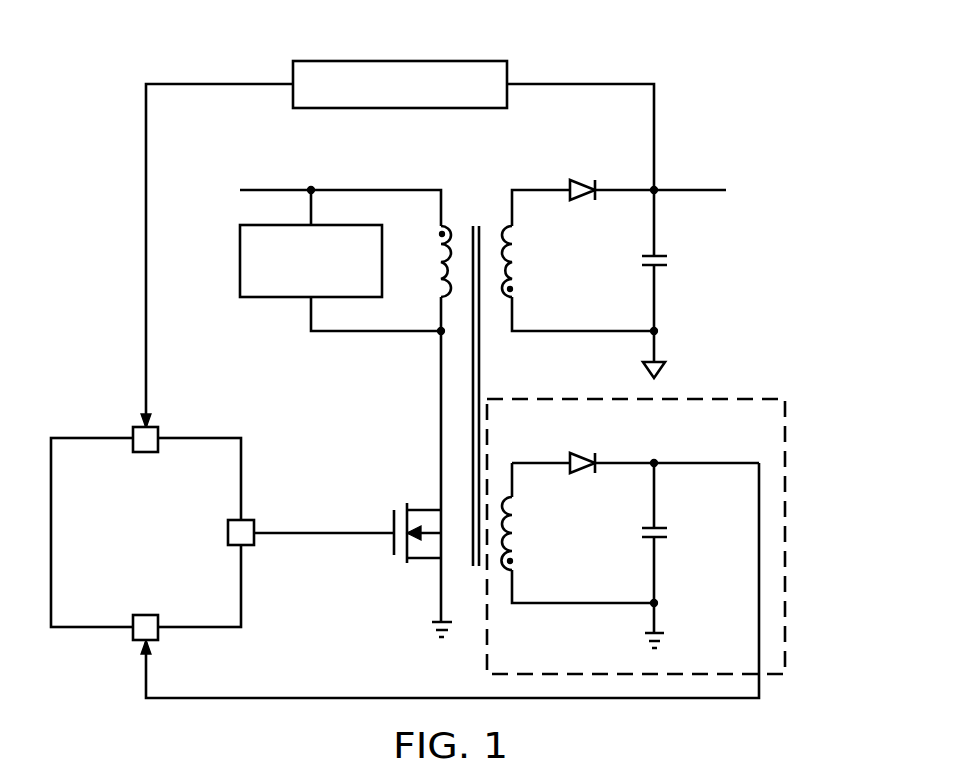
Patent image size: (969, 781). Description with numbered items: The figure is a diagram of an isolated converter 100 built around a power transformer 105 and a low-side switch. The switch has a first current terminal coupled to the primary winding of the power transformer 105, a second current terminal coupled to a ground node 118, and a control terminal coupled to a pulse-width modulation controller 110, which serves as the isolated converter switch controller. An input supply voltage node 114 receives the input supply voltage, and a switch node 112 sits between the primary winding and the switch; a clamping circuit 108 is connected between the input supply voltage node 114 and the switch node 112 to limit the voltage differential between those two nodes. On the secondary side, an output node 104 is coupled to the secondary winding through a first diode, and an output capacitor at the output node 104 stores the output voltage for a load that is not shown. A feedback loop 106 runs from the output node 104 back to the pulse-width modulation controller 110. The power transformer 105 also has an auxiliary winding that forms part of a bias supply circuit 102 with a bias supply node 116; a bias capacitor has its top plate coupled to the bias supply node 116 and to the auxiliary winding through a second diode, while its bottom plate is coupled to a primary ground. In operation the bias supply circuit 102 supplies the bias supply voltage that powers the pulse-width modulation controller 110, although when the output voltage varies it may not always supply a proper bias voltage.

The isolated converter 100 is at (82, 80).
The bias supply circuit 102 is at (792, 553).
The output node 104 is at (658, 186).
The power transformer 105 is at (476, 204).
The feedback loop 106 is at (400, 60).
The clamping circuit 108 is at (290, 299).
The pulse-width modulation (PWM) controller 110 is at (168, 581).
The switch node 112 is at (437, 337).
The input supply voltage (VIN) node 114 is at (311, 188).
The bias supply node 116 is at (656, 461).
The ground node 118 is at (430, 628).